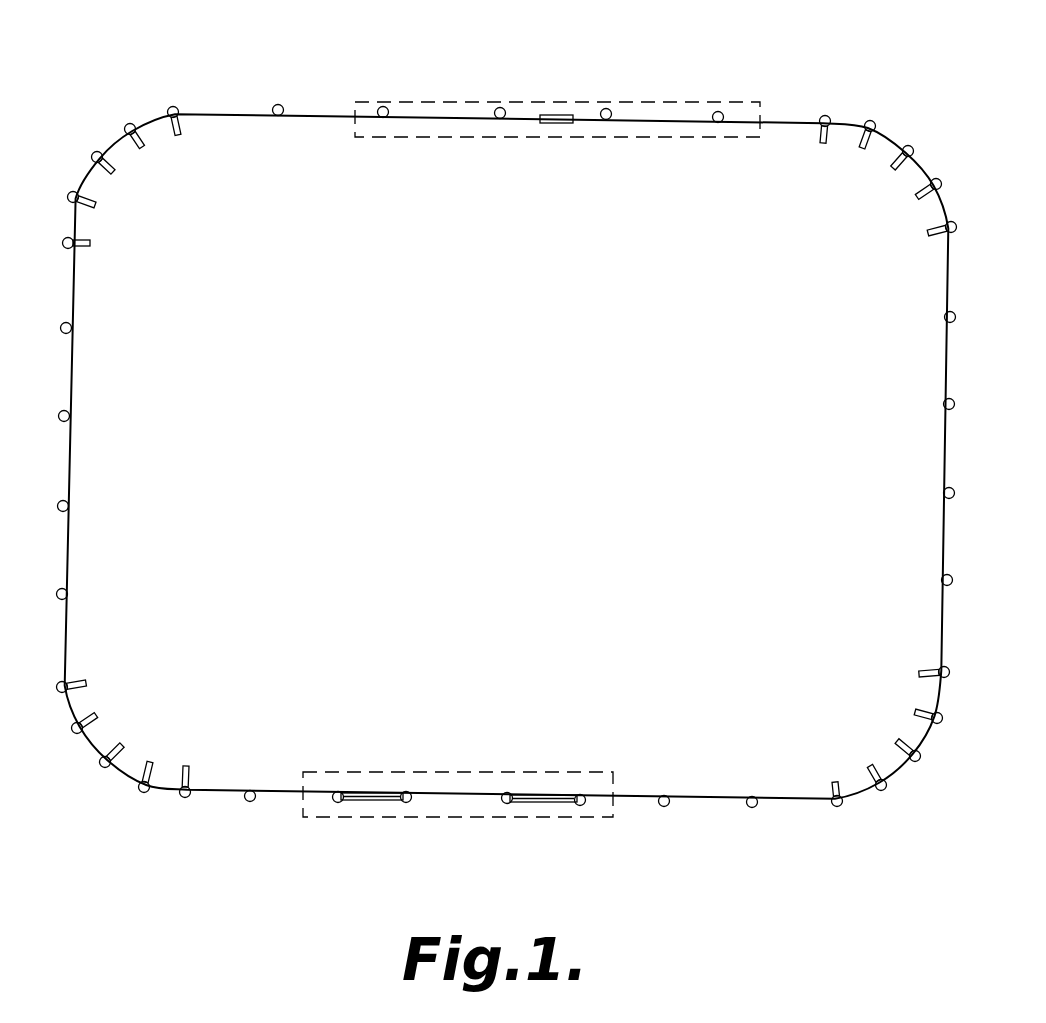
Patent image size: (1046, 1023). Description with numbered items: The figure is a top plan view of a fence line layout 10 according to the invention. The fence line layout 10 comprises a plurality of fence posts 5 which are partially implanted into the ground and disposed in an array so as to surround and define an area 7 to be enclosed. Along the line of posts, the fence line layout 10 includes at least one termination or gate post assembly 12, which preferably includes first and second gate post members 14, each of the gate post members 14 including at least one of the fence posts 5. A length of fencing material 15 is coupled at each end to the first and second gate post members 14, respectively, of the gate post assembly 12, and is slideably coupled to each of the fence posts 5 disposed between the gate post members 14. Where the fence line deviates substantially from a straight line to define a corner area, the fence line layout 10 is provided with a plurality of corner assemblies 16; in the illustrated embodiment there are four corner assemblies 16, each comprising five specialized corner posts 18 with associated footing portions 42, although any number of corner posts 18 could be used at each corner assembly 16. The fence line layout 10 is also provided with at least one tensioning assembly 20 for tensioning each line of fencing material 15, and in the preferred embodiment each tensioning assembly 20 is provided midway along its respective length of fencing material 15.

The fence line layout 10 is at (293, 72).
The area to be enclosed 7 is at (512, 399).
The corner posts 18 is at (165, 100).
The footing portions 42 is at (127, 173).
The corner assemblies 16 is at (121, 200).
The fence posts 5 is at (86, 327).
The tensioning assembly 20 is at (551, 100).
The gate post assembly 12 is at (479, 761).
The gate post members 14 is at (522, 811).
The fencing material 15 is at (689, 808).